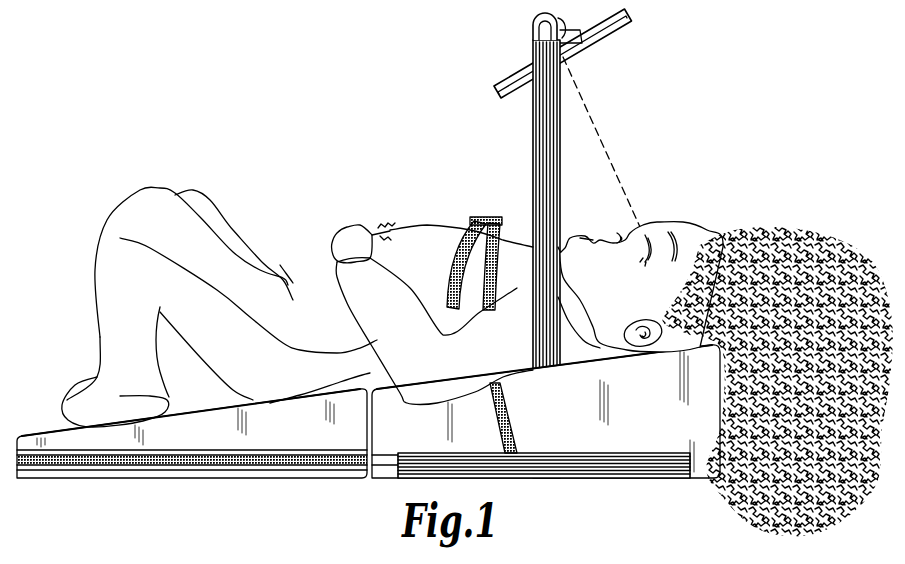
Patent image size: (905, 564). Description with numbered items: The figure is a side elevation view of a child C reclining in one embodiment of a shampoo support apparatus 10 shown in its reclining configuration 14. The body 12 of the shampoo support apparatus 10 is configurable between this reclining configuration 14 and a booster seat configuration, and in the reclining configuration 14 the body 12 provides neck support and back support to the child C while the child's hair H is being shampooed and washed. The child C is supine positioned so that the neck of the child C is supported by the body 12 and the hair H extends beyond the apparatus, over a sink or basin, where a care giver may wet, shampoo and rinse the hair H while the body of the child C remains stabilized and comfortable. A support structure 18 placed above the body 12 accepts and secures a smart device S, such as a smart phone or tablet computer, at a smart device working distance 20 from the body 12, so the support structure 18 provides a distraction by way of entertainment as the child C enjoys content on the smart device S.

The shampoo support apparatus 10 is at (404, 160).
The body 12 is at (275, 482).
The reclining configuration 14 is at (328, 482).
The support structure 18 is at (528, 132).
The smart device working distance 20 is at (602, 140).
The smart device S is at (600, 42).
The child C is at (683, 224).
The hair H is at (789, 233).